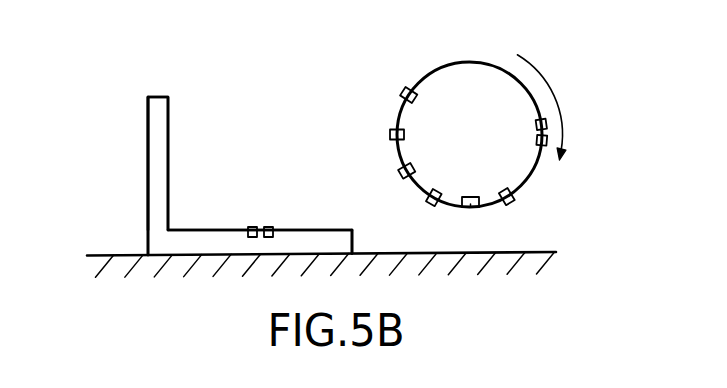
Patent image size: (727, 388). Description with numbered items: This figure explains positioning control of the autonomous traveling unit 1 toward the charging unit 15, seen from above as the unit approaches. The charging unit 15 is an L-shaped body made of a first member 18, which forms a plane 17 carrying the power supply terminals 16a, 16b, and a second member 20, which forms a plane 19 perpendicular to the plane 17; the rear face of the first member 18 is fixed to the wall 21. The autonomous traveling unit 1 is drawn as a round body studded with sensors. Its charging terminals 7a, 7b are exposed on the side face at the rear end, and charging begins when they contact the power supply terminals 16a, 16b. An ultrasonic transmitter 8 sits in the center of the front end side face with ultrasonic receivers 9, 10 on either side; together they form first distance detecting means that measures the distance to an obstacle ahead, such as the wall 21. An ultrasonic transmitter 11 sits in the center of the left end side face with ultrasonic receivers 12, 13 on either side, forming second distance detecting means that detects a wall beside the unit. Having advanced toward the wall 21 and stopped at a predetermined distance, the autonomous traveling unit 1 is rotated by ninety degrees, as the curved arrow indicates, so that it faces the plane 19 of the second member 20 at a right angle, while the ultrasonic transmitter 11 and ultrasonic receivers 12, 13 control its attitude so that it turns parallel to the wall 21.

The autonomous traveling unit 1 is at (434, 60).
The charging terminal 7a is at (535, 140).
The charging terminal 7b is at (535, 122).
The ultrasonic transmitter 8 is at (397, 135).
The ultrasonic receiver 9 is at (403, 168).
The ultrasonic receiver 10 is at (406, 97).
The ultrasonic transmitter 11 is at (465, 207).
The ultrasonic receiver 12 is at (520, 190).
The ultrasonic receiver 13 is at (430, 198).
The charging unit 15 is at (138, 150).
The power supply terminal 16a is at (248, 228).
The power supply terminal 16b is at (268, 227).
The plane 17 is at (293, 228).
The first member 18 is at (327, 235).
The plane 19 is at (170, 120).
The second member 20 is at (155, 188).
The wall 21 is at (530, 252).